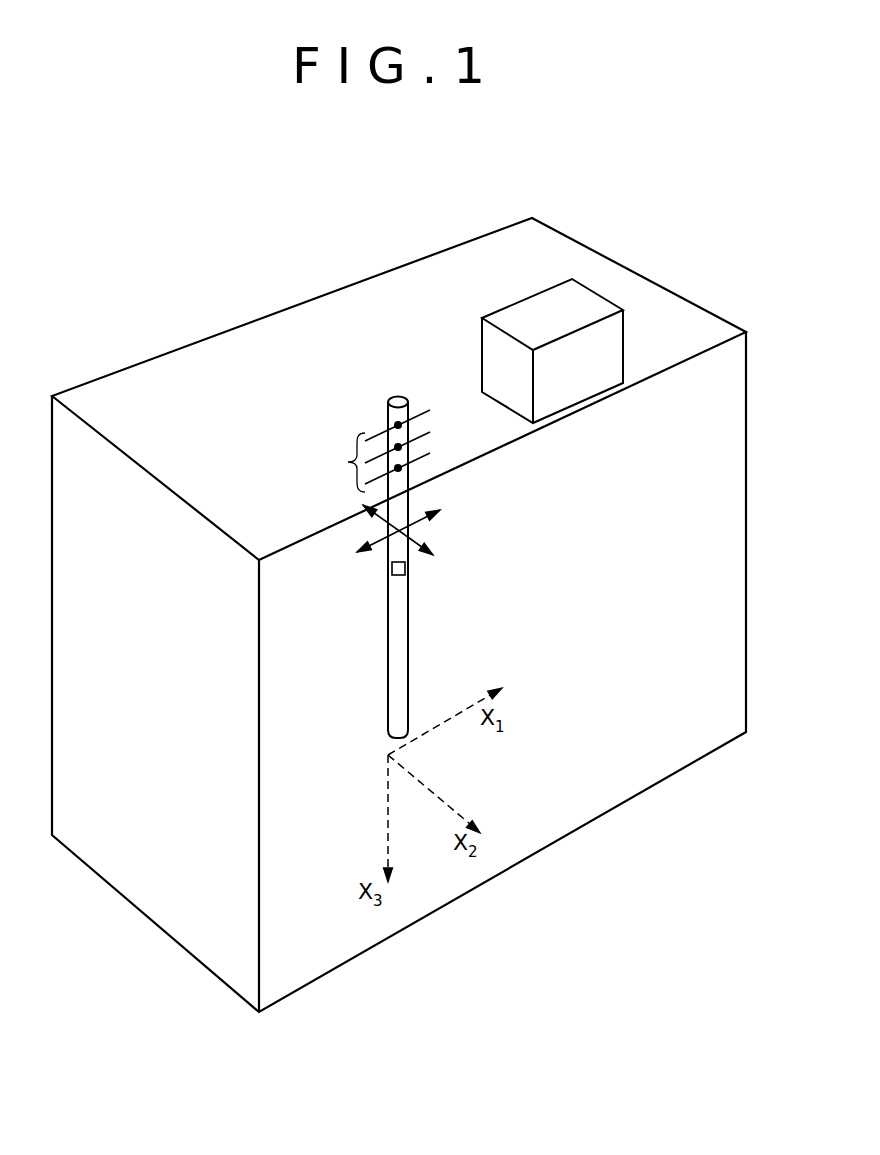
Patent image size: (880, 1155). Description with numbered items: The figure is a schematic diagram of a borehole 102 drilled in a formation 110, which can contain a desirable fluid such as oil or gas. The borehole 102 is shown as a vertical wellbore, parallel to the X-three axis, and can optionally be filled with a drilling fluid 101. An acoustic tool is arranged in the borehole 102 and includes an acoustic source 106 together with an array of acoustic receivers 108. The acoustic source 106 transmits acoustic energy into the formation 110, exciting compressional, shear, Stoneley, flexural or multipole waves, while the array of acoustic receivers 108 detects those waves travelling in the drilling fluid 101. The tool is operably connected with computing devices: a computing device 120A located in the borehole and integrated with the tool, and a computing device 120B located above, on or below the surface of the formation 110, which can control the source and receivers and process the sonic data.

The formation 110 is at (531, 236).
The computing device 120B is at (552, 351).
The drilling fluid 101 is at (386, 631).
The borehole 102 is at (387, 372).
The array of acoustic receivers 108 is at (348, 462).
The acoustic source 106 is at (443, 486).
The computing device 120A is at (420, 567).